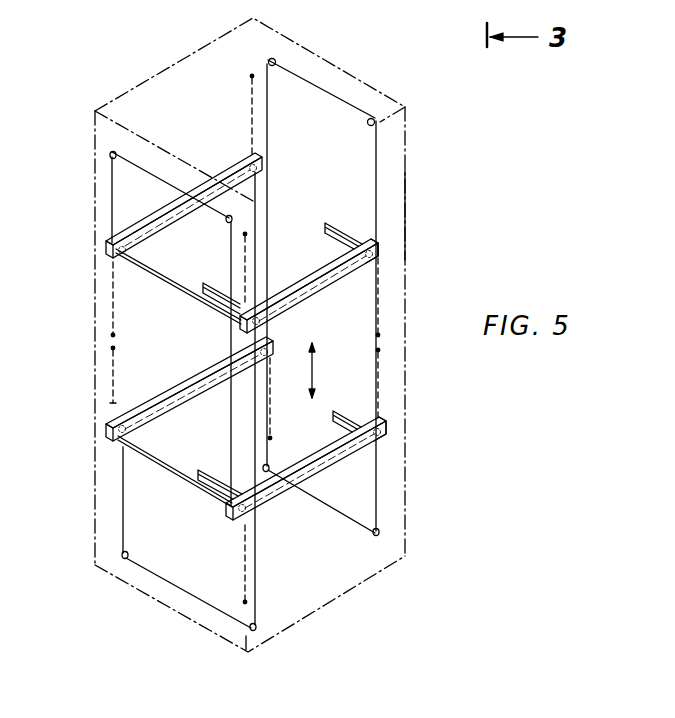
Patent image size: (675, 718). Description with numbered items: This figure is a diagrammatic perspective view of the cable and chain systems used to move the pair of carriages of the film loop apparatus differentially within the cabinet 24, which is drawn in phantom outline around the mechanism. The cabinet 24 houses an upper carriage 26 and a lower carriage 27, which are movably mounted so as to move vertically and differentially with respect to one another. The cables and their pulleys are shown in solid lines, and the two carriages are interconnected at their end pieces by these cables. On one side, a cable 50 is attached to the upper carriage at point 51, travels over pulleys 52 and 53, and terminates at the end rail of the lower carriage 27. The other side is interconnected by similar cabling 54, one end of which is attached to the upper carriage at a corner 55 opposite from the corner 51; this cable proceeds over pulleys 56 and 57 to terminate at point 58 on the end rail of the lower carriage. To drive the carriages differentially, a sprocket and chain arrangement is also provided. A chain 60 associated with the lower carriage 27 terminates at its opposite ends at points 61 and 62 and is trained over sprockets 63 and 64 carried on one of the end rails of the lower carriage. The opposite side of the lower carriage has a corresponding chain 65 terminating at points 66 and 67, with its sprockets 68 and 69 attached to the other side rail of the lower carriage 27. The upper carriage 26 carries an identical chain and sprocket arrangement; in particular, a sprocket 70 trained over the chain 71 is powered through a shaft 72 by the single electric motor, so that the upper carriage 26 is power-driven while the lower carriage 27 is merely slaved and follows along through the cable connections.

The cabinet 24 is at (407, 212).
The upper carriage 26 is at (390, 250).
The lower carriage 27 is at (392, 430).
The cable 50 is at (157, 173).
The attachment point 51 is at (108, 246).
The pulley 52 is at (110, 155).
The pulley 53 is at (226, 222).
The cable 54 is at (338, 93).
The attachment point 55 is at (380, 238).
The pulley 56 is at (378, 125).
The pulley 57 is at (273, 57).
The termination point 58 is at (270, 337).
The chain 60 is at (113, 400).
The chain end point 61 is at (111, 348).
The chain end point 62 is at (272, 438).
The sprocket 63 is at (106, 444).
The sprocket 64 is at (278, 344).
The chain 65 is at (245, 554).
The chain end point 66 is at (245, 604).
The chain end point 67 is at (380, 350).
The sprocket 68 is at (256, 520).
The sprocket 69 is at (383, 442).
The sprocket 70 is at (106, 255).
The chain 71 is at (113, 313).
The shaft 72 is at (184, 291).